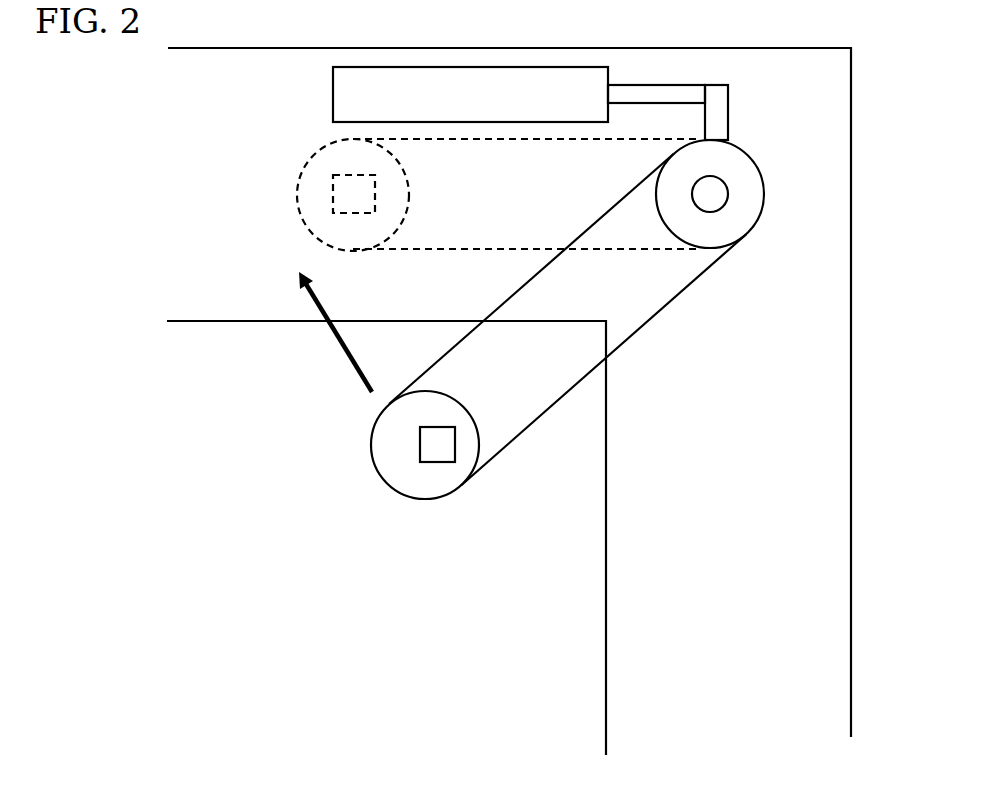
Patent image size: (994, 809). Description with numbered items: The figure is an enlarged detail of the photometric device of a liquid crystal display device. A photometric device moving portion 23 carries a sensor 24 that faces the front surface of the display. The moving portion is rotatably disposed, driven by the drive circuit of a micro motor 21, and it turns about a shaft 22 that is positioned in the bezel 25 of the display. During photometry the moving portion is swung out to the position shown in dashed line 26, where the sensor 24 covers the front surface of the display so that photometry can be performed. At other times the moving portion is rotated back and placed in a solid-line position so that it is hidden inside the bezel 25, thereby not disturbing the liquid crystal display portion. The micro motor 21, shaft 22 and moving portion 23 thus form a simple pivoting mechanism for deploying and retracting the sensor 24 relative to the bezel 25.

The micro motor 21 is at (372, 86).
The shaft 22 is at (728, 194).
The photometric device moving portion 23 is at (549, 285).
The sensor 24 is at (432, 445).
The bezel 25 is at (654, 651).
The dashed line position 26 is at (311, 196).